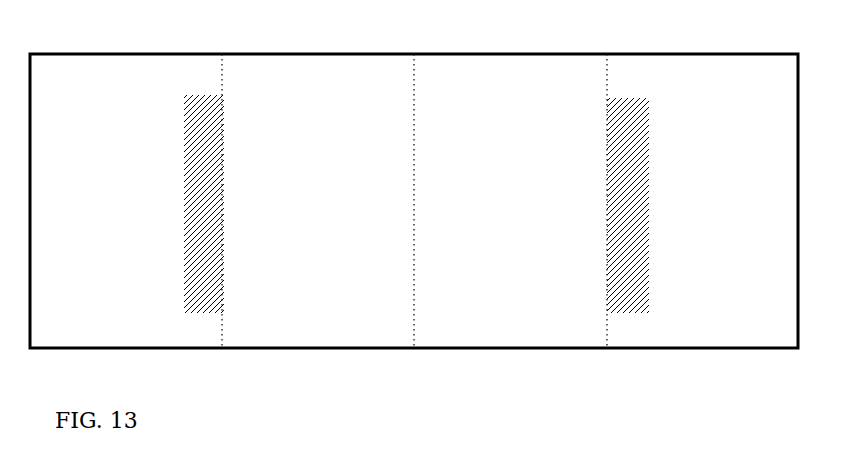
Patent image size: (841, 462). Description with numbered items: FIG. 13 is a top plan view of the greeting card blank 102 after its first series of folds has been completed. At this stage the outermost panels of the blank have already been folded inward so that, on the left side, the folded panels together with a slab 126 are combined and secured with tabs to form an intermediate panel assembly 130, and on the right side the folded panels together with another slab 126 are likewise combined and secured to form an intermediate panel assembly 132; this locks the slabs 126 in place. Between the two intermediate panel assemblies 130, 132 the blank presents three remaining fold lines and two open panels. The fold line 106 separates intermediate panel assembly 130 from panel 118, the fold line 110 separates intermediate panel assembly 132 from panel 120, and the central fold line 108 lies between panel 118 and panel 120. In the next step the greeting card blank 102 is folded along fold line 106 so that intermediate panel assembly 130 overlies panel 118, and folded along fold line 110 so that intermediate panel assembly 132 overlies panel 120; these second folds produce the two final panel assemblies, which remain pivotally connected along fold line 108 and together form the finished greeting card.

The greeting card blank 102 is at (430, 41).
The fold line 106 is at (223, 319).
The fold line 108 is at (415, 317).
The fold line 110 is at (607, 325).
The panel 118 is at (330, 280).
The panel 120 is at (523, 275).
The slab 126 is at (200, 152).
The intermediate panel assembly 130 is at (138, 205).
The intermediate panel assembly 132 is at (739, 206).